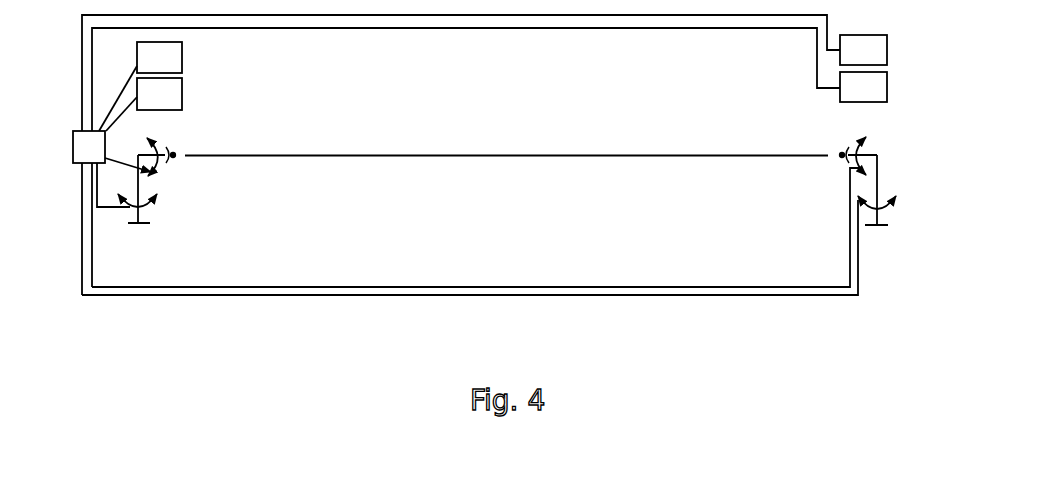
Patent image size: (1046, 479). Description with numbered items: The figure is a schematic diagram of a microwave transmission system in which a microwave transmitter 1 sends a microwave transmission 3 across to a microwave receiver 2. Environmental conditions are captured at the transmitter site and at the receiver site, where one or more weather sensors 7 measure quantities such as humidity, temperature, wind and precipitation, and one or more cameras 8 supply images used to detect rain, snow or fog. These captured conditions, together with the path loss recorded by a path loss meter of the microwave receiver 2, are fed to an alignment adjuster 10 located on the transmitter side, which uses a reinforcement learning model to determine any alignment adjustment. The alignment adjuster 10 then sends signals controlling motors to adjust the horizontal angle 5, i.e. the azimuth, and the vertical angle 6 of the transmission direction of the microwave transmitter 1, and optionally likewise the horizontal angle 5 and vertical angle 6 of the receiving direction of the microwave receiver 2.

The microwave transmitter 1 is at (131, 226).
The microwave receiver 2 is at (884, 226).
The microwave transmission 3 is at (622, 157).
The horizontal angle 5 is at (160, 196).
The vertical angle 6 is at (150, 137).
The weather sensor 7 is at (182, 53).
The camera 8 is at (182, 90).
The alignment adjuster 10 is at (73, 132).